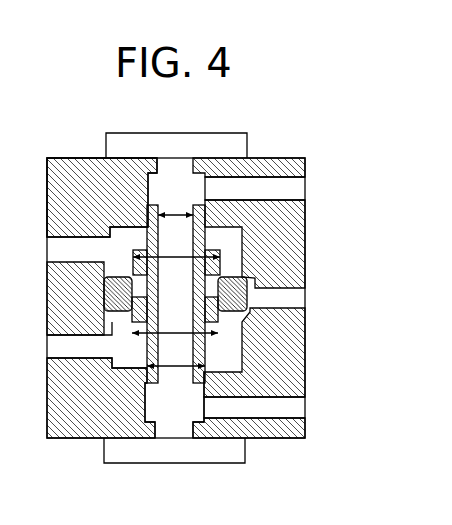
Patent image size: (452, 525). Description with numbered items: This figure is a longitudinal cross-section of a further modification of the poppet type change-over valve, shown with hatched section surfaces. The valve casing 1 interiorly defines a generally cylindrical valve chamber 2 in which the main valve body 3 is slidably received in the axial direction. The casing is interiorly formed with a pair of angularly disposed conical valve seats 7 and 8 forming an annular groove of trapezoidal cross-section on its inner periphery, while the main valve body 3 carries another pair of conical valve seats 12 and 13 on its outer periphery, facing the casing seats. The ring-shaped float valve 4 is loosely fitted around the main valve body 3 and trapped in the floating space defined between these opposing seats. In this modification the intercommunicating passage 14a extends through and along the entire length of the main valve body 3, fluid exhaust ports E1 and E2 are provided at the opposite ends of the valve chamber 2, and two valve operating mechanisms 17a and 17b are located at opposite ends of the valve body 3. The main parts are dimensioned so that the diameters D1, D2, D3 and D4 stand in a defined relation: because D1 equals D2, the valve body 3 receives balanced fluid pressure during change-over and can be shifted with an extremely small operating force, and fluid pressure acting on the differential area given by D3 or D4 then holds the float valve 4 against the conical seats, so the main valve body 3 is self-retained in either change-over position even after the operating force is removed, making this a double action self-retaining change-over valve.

The valve casing 1 is at (277, 143).
The valve chamber 2 is at (240, 238).
The main valve body 3 is at (181, 196).
The float valve 4 is at (101, 292).
The conical valve seat 7 is at (243, 316).
The conical valve seat 8 is at (250, 284).
The conical valve seat 12 is at (126, 257).
The conical valve seat 13 is at (128, 318).
The intercommunicating passage 14a is at (165, 378).
The valve operating mechanism 17a is at (127, 143).
The valve operating mechanism 17b is at (118, 455).
The fluid exhaust port E1 is at (298, 190).
The fluid exhaust port E2 is at (298, 408).
The diameter D1 is at (176, 374).
The diameter D2 is at (175, 222).
The diameter D3 is at (175, 341).
The diameter D4 is at (176, 264).